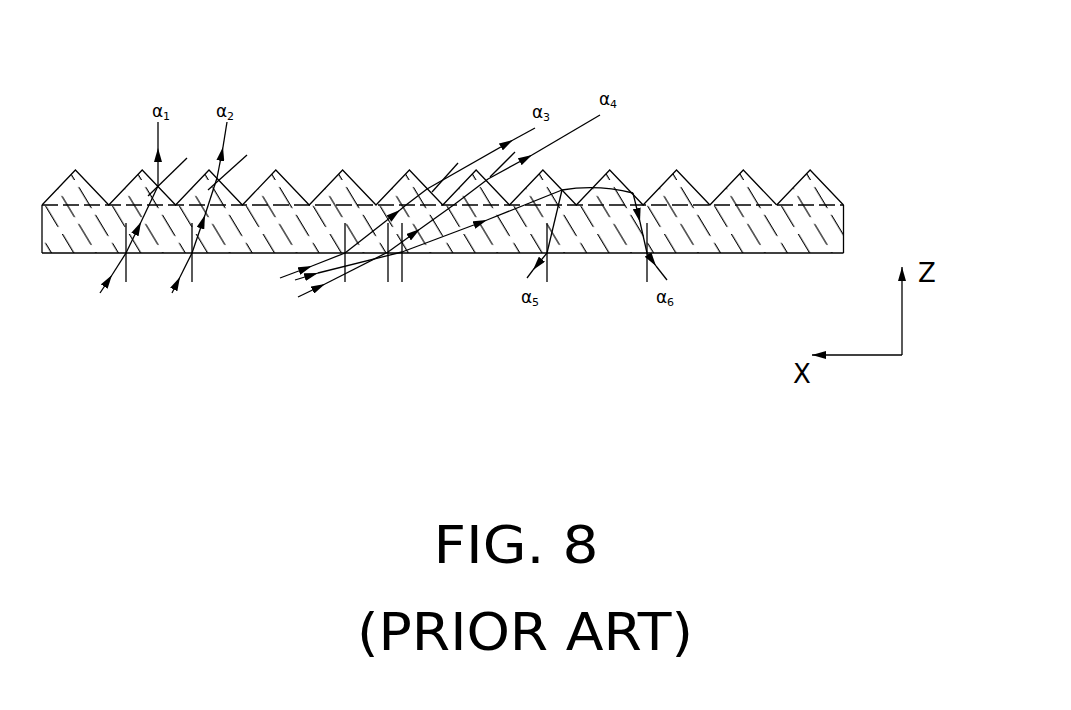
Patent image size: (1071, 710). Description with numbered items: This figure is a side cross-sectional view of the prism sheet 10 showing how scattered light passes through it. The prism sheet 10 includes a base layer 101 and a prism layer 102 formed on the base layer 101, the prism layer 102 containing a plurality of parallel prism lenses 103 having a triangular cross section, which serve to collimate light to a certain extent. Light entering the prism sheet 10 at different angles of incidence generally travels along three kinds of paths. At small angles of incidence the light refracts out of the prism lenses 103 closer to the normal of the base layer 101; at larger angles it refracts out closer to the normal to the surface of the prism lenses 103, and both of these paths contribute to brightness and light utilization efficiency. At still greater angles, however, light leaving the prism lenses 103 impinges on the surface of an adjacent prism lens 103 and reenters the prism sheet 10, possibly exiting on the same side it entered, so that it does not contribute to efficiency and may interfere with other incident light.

The prism sheet 10 is at (383, 100).
The base layer 101 is at (443, 254).
The prism layer 102 is at (755, 186).
The prism lenses 103 is at (829, 188).